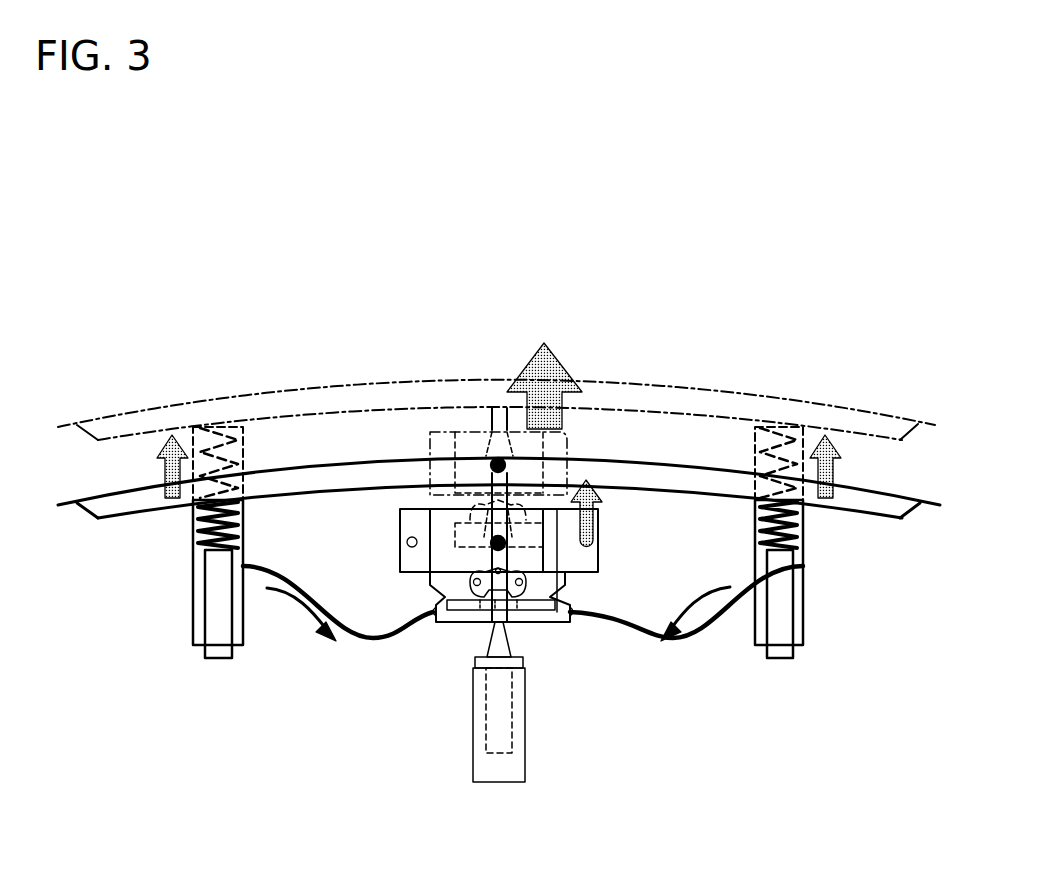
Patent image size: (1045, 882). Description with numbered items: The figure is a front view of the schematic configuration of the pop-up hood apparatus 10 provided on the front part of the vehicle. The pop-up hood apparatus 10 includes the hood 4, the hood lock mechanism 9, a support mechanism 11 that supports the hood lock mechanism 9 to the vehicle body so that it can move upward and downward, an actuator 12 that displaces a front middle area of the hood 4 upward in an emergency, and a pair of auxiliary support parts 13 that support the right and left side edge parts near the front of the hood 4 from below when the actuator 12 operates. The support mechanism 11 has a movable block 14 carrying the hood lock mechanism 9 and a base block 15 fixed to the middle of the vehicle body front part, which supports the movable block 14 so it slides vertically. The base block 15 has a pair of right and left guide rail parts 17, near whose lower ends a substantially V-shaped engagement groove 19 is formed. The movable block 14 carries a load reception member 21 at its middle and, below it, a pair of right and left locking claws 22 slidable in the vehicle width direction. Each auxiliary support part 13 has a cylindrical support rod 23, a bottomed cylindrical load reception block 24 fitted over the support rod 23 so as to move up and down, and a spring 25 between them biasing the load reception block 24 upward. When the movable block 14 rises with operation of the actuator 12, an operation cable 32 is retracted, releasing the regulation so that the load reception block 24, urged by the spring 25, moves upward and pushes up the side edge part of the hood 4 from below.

The pop-up hood apparatus 10 is at (724, 244).
The hood 4 is at (300, 462).
The load reception member 21 is at (494, 572).
The guide rail parts 17 is at (440, 580).
The movable block 14 is at (448, 590).
The base block 15 is at (597, 530).
The spring 25 is at (196, 512).
The auxiliary support parts 13 is at (186, 531).
The load reception block 24 is at (192, 584).
The support rod 23 is at (218, 659).
The operation cable 32 is at (258, 573).
The engagement groove 19 is at (433, 616).
The support mechanism 11 is at (436, 628).
The locking claws 22 is at (468, 612).
The actuator 12 is at (472, 748).
The hood lock mechanism 9 is at (565, 432).